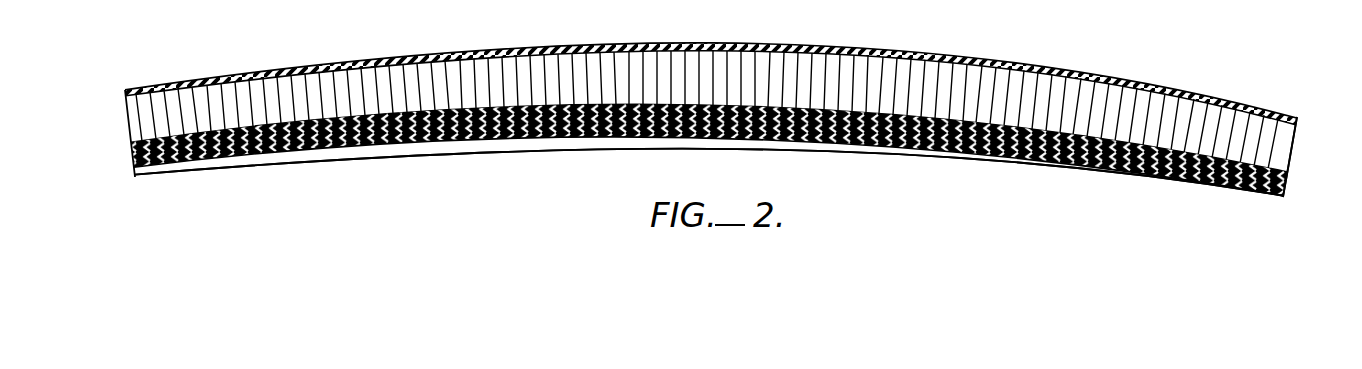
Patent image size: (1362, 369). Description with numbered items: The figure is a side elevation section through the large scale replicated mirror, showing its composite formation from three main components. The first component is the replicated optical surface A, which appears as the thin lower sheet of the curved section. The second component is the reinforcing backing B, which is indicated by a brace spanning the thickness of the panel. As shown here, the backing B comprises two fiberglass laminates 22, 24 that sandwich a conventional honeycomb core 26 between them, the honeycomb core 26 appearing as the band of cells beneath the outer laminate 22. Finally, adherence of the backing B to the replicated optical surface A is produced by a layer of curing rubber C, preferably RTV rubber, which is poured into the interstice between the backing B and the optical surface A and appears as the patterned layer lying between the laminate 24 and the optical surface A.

The fiberglass laminate 22 is at (1160, 86).
The honeycomb core 26 is at (1197, 112).
The fiberglass laminate 24 is at (1134, 170).
The optical surface A is at (732, 147).
The reinforcing backing B is at (1297, 184).
The layer of curing rubber C is at (1233, 187).